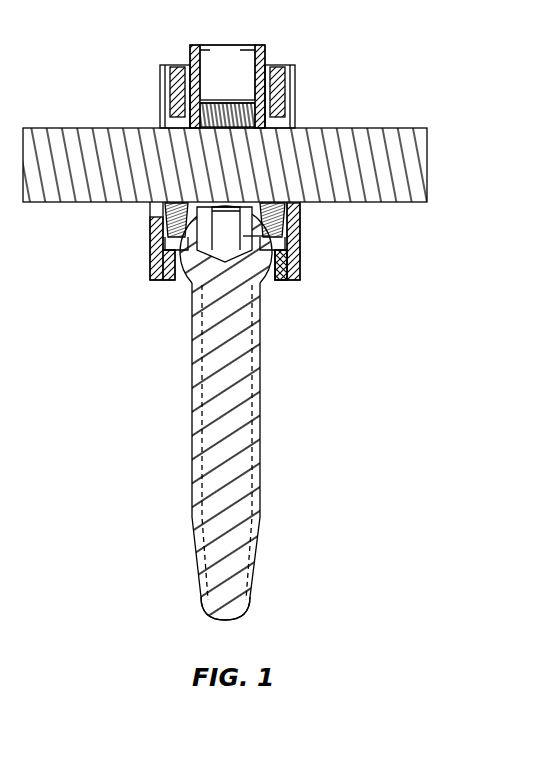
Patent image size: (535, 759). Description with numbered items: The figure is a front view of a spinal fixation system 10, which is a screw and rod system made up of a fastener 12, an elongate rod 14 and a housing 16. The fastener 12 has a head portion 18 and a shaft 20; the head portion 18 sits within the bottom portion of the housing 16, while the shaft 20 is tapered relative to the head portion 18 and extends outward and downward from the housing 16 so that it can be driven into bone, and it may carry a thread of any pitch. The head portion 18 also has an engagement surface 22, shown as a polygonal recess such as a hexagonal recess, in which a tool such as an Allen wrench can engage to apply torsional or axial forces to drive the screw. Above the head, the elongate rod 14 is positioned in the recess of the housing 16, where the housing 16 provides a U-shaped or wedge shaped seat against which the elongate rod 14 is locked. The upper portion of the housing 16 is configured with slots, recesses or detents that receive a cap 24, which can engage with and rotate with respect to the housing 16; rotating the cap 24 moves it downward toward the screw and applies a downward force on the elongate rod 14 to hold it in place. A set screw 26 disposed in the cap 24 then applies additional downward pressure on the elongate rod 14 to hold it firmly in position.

The spinal fixation system 10 is at (364, 44).
The fastener 12 is at (260, 330).
The elongate rod 14 is at (401, 128).
The housing 16 is at (152, 245).
The head portion 18 is at (183, 281).
The shaft 20 is at (200, 582).
The engagement surface 22 is at (295, 262).
The cap 24 is at (195, 47).
The set screw 26 is at (228, 47).